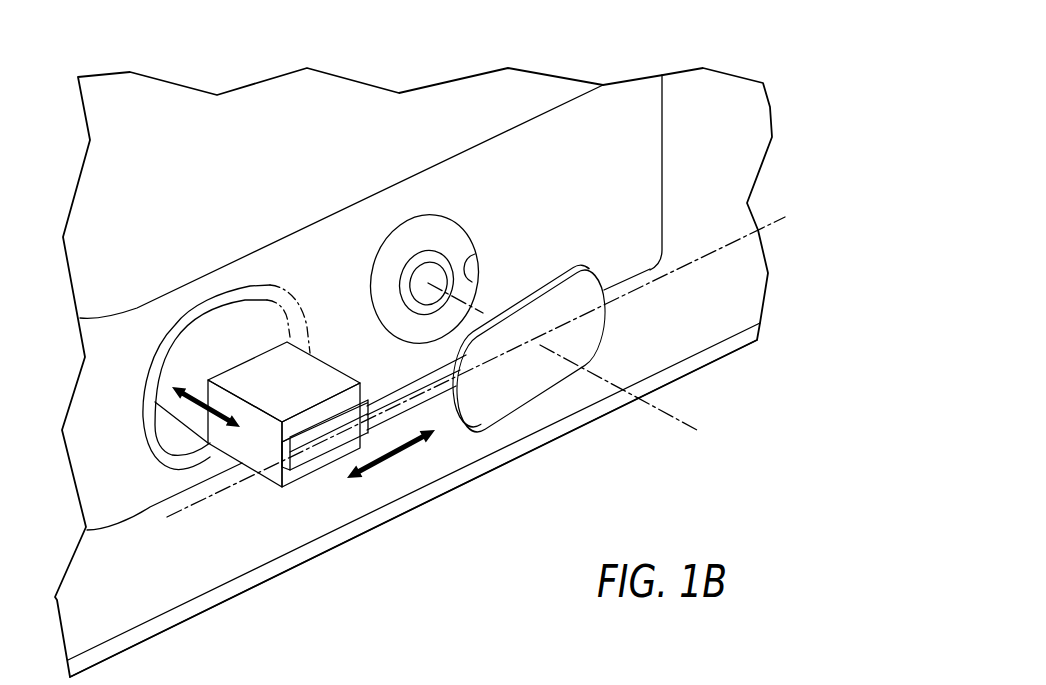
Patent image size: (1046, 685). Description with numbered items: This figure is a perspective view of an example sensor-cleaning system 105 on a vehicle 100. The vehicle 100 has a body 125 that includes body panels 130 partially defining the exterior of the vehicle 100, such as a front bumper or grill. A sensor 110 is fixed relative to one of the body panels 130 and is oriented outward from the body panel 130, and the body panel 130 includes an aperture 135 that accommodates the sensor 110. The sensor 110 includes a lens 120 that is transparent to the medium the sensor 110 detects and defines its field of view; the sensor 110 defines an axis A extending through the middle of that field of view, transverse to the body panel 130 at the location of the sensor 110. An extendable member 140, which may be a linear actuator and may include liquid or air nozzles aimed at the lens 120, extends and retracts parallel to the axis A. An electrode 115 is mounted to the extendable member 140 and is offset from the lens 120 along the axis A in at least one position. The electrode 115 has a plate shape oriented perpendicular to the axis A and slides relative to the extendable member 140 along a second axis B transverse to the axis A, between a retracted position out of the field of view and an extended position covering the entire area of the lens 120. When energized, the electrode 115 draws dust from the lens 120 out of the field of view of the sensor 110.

The vehicle 100 is at (449, 359).
The sensor-cleaning system 105 is at (287, 147).
The sensor 110 is at (465, 255).
The electrode 115 is at (606, 343).
The lens 120 is at (430, 285).
The body 125 is at (466, 483).
The body panel 130 is at (622, 167).
The aperture 135 is at (473, 260).
The extendable member 140 is at (257, 377).
The axis A is at (571, 367).
The second axis B is at (487, 360).